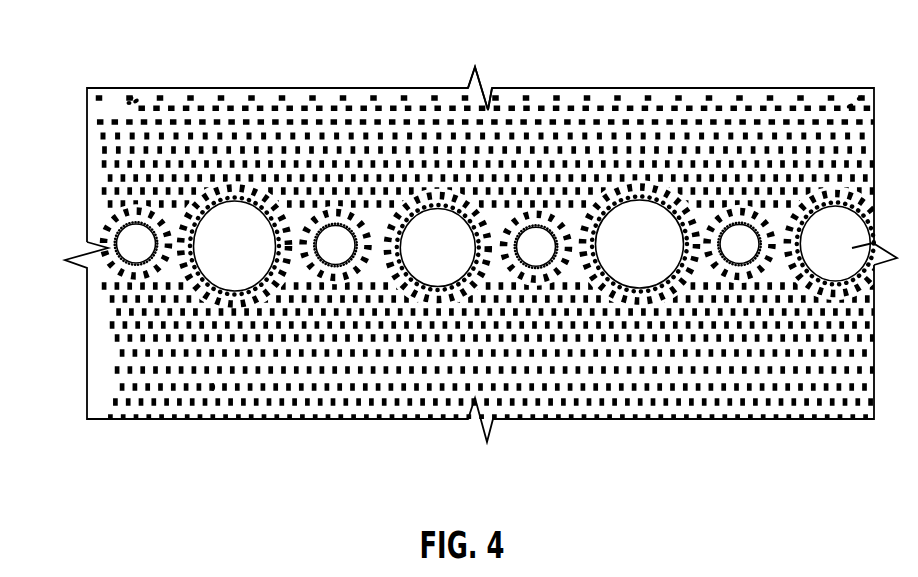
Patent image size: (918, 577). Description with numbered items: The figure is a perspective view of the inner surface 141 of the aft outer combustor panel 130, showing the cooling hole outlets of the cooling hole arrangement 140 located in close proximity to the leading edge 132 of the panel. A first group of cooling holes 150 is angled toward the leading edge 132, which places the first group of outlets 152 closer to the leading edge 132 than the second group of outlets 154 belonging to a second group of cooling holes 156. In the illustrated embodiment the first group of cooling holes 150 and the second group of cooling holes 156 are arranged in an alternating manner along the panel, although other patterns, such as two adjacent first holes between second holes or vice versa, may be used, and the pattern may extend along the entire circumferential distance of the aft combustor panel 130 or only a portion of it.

The aft outer combustor panel 130 is at (322, 424).
The leading edge 132 is at (466, 88).
The cooling hole arrangement 140 is at (128, 88).
The inner surface 141 is at (212, 390).
The first group of cooling holes 150 is at (849, 94).
The first group of outlets 152 is at (166, 97).
The second group of outlets 154 is at (295, 107).
The second group of cooling holes 156 is at (130, 100).